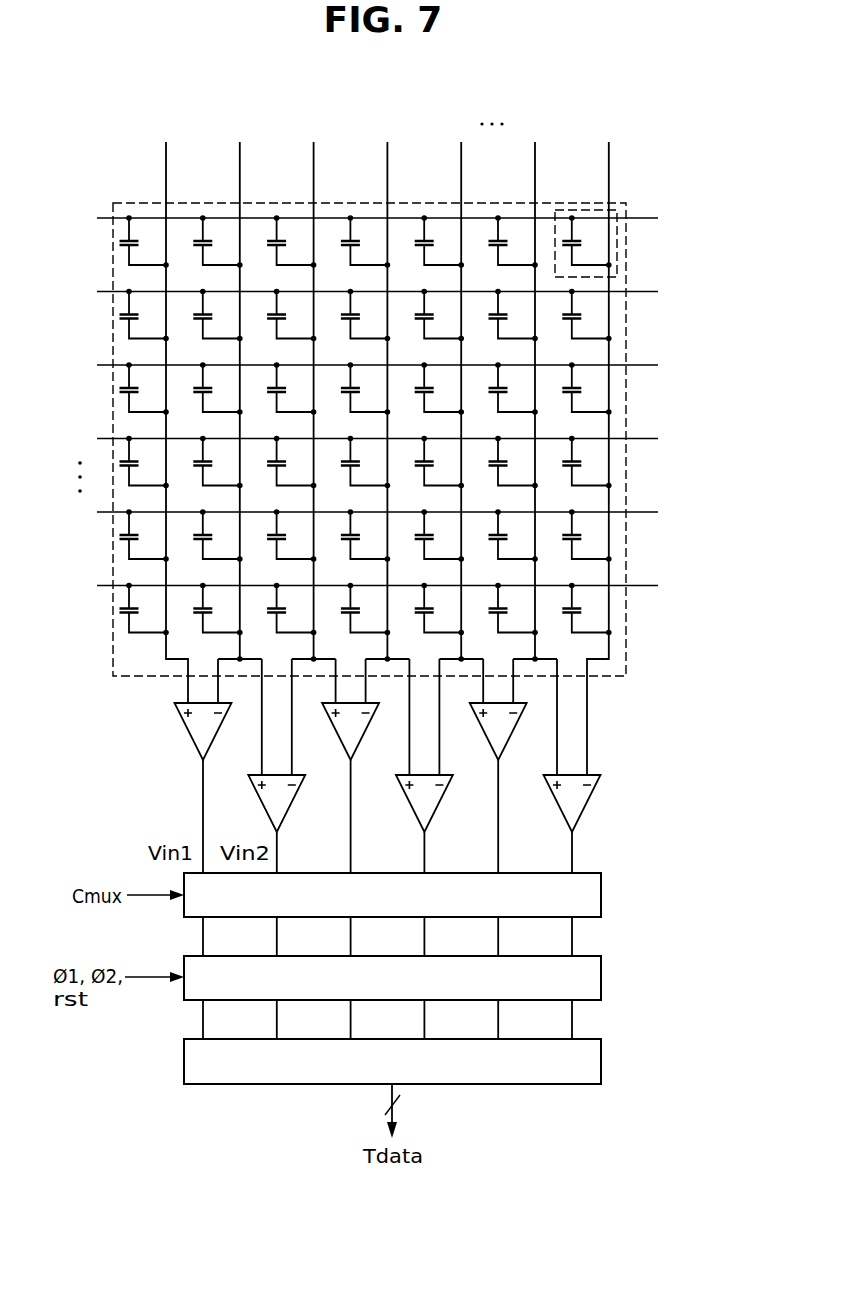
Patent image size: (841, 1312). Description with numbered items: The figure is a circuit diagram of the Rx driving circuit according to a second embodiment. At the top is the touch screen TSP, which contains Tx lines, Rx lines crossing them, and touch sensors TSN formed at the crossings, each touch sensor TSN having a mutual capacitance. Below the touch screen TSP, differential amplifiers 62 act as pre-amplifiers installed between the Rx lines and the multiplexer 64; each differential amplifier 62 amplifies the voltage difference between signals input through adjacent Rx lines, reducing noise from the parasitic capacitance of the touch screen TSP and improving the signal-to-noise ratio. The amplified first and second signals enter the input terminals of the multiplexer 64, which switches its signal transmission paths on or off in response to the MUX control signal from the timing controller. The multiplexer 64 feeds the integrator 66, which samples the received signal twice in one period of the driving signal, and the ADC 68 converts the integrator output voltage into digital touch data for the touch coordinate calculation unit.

The differential amplifier 62 is at (584, 797).
The multiplexer 64 is at (379, 903).
The integrator 66 is at (379, 986).
The ADC 68 is at (379, 1070).
The touch sensor TSN is at (617, 252).
The touch screen TSP is at (626, 466).